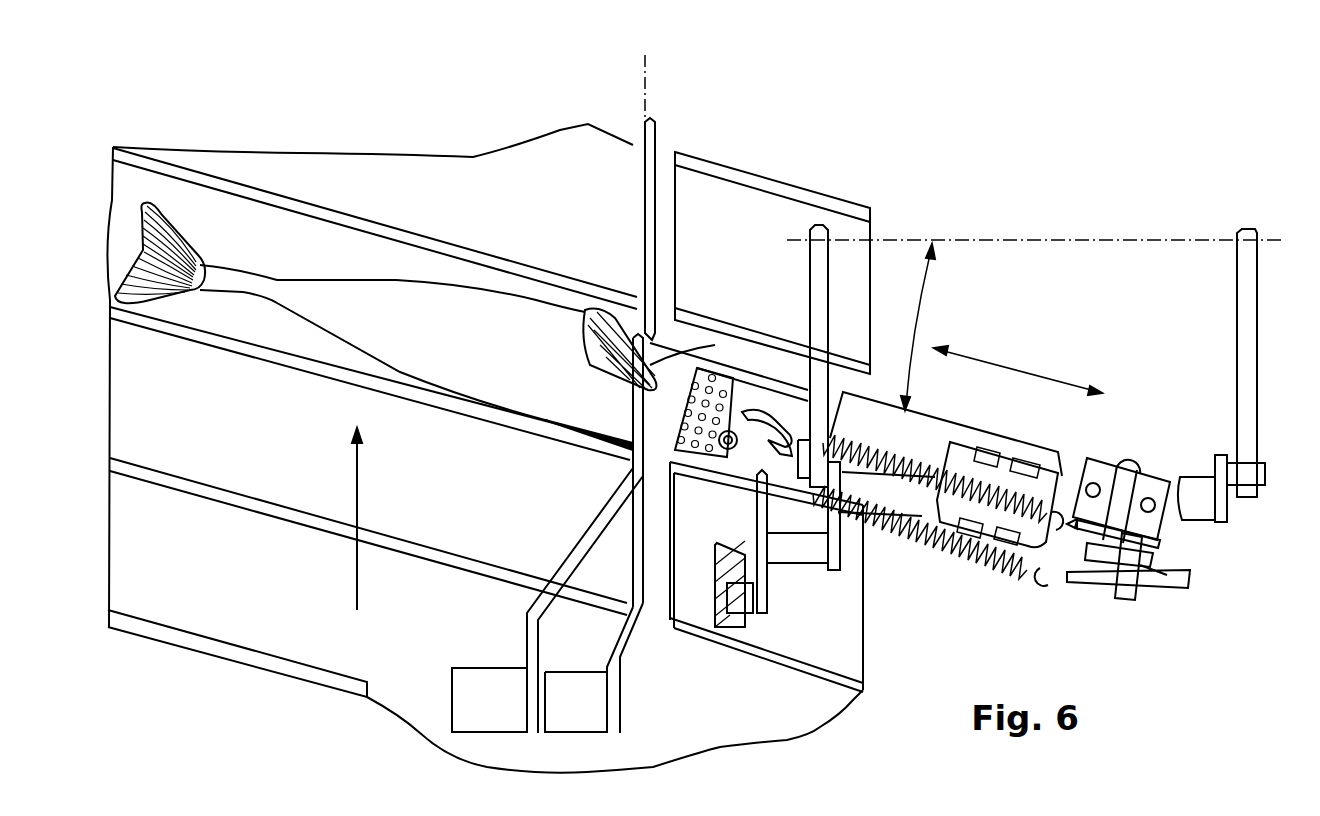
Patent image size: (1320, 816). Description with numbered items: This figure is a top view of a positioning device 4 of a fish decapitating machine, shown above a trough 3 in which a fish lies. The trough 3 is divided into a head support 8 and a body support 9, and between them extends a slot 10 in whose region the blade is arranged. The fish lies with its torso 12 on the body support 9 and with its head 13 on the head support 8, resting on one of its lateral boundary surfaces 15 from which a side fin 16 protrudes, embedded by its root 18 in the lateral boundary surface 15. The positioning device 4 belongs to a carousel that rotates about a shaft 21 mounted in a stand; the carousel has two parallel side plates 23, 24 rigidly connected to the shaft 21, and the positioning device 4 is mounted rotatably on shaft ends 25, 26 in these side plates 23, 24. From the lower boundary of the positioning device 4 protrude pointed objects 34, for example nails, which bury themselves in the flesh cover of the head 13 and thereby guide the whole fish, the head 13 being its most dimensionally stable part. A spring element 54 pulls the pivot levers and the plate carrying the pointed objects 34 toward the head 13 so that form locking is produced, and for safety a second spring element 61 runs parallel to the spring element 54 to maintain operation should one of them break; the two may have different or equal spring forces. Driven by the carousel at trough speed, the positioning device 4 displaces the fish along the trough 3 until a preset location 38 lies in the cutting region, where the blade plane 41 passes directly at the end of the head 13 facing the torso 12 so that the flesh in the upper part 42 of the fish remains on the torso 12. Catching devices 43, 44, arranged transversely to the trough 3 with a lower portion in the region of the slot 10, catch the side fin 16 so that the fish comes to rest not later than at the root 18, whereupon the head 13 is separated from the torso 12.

The trough 3 is at (265, 252).
The positioning device 4 is at (1200, 510).
The head support 8 is at (775, 236).
The body support 9 is at (563, 437).
The slot 10 is at (656, 520).
The torso 12 is at (375, 270).
The head 13 is at (756, 380).
The lateral boundary surface 15 is at (462, 357).
The side fin 16 is at (618, 300).
The root 18 is at (765, 405).
The shaft 21 is at (1148, 240).
The side plate 23 is at (820, 272).
The side plate 24 is at (1245, 353).
The shaft end 25 is at (783, 553).
The shaft end 26 is at (1265, 480).
The pointed object 34 is at (690, 483).
The preset location 38 is at (660, 346).
The blade plane 41 is at (648, 82).
The upper part 42 is at (543, 420).
The catching device 43 is at (600, 522).
The catching device 44 is at (620, 630).
The spring element 54 is at (857, 443).
The spring element 61 is at (842, 563).